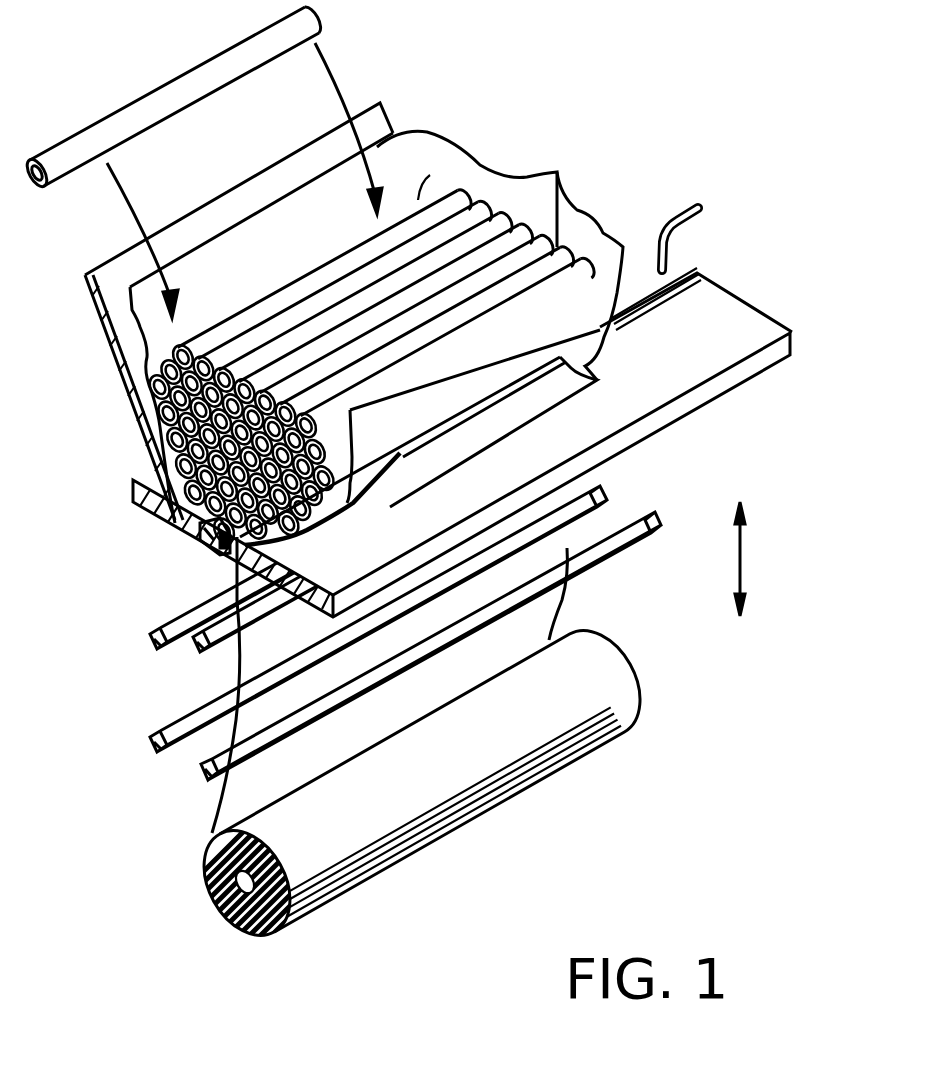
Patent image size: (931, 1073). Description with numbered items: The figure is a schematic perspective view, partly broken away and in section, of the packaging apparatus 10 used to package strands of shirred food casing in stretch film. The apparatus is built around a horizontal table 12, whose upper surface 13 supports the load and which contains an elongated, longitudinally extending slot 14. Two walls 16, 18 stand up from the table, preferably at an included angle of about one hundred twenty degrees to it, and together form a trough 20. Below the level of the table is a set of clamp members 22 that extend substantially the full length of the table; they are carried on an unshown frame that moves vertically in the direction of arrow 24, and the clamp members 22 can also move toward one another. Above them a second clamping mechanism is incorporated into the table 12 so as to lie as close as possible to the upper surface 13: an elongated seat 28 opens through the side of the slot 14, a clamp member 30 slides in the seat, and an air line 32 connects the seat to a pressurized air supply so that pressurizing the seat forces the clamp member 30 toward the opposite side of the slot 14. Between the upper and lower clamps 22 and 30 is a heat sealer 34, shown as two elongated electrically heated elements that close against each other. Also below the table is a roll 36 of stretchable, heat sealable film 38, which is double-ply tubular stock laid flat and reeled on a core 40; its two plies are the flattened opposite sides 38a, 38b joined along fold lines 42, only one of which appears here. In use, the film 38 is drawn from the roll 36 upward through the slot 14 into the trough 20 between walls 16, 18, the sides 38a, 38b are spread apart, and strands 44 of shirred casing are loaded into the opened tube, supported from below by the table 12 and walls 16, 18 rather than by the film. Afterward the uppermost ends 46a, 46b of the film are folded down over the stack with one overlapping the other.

The packaging apparatus 10 is at (88, 452).
The table 12 is at (707, 387).
The upper surface of table 13 is at (689, 367).
The slot 14 is at (700, 268).
The wall 16 is at (486, 426).
The wall 18 is at (122, 366).
The trough 20 is at (120, 256).
The clamp members 22 is at (218, 762).
The arrow 24 is at (741, 572).
The seat 28 is at (205, 548).
The clamp member 30 is at (679, 287).
The air line 32 is at (692, 207).
The heat sealer 34 is at (212, 600).
The roll 36 is at (503, 803).
The film 38 is at (265, 665).
The flattened side of tube 38a is at (513, 337).
The flattened side of tube 38b is at (306, 238).
The core 40 is at (225, 889).
The fold line 42 is at (556, 220).
The strands 44 is at (143, 133).
The uppermost end of tubular film 46a is at (545, 285).
The uppermost end of tubular film 46b is at (345, 165).